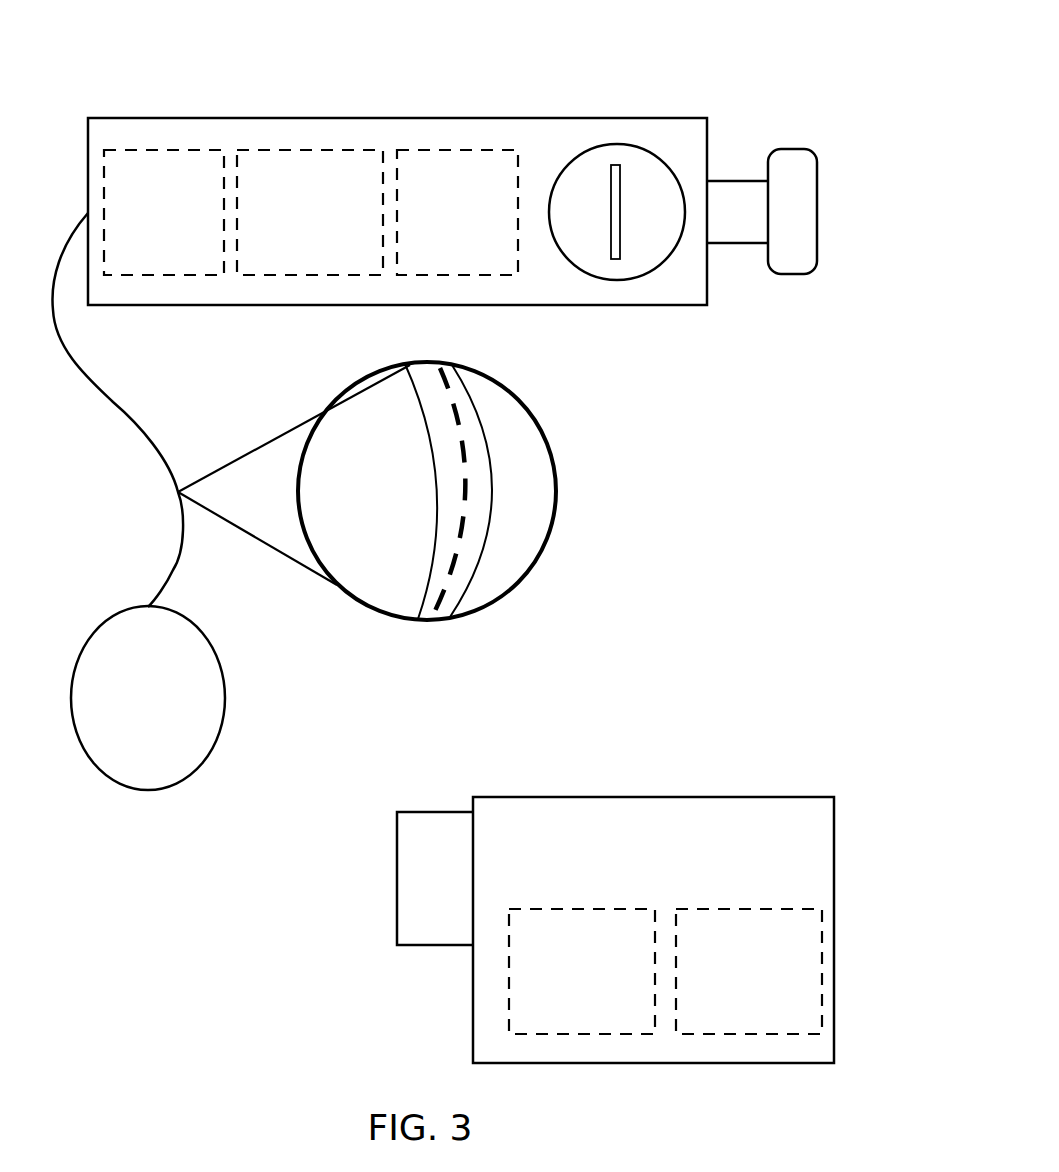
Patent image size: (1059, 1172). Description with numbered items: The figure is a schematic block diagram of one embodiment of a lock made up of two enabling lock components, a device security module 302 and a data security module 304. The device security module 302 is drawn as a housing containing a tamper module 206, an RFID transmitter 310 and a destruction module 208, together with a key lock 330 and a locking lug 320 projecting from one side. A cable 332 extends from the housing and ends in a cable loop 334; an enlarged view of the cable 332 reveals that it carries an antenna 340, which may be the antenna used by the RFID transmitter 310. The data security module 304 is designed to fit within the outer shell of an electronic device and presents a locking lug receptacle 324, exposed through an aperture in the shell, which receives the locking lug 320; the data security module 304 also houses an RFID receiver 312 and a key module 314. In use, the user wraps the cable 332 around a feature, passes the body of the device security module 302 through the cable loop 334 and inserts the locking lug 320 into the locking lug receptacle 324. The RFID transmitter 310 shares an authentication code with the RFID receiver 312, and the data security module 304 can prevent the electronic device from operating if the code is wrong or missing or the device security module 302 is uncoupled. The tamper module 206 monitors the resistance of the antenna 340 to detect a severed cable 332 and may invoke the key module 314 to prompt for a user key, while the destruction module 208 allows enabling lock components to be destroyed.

The device security module 302 is at (222, 117).
The tamper module 206 is at (148, 247).
The RFID transmitter 310 is at (294, 247).
The destruction module 208 is at (441, 247).
The key lock 330 is at (619, 282).
The locking lug 320 is at (739, 176).
The cable 332 is at (114, 401).
The antenna 340 is at (474, 491).
The cable loop 334 is at (93, 632).
The data security module 304 is at (637, 884).
The locking lug receptacle 324 is at (437, 808).
The RFID receiver 312 is at (566, 995).
The key module 314 is at (733, 995).